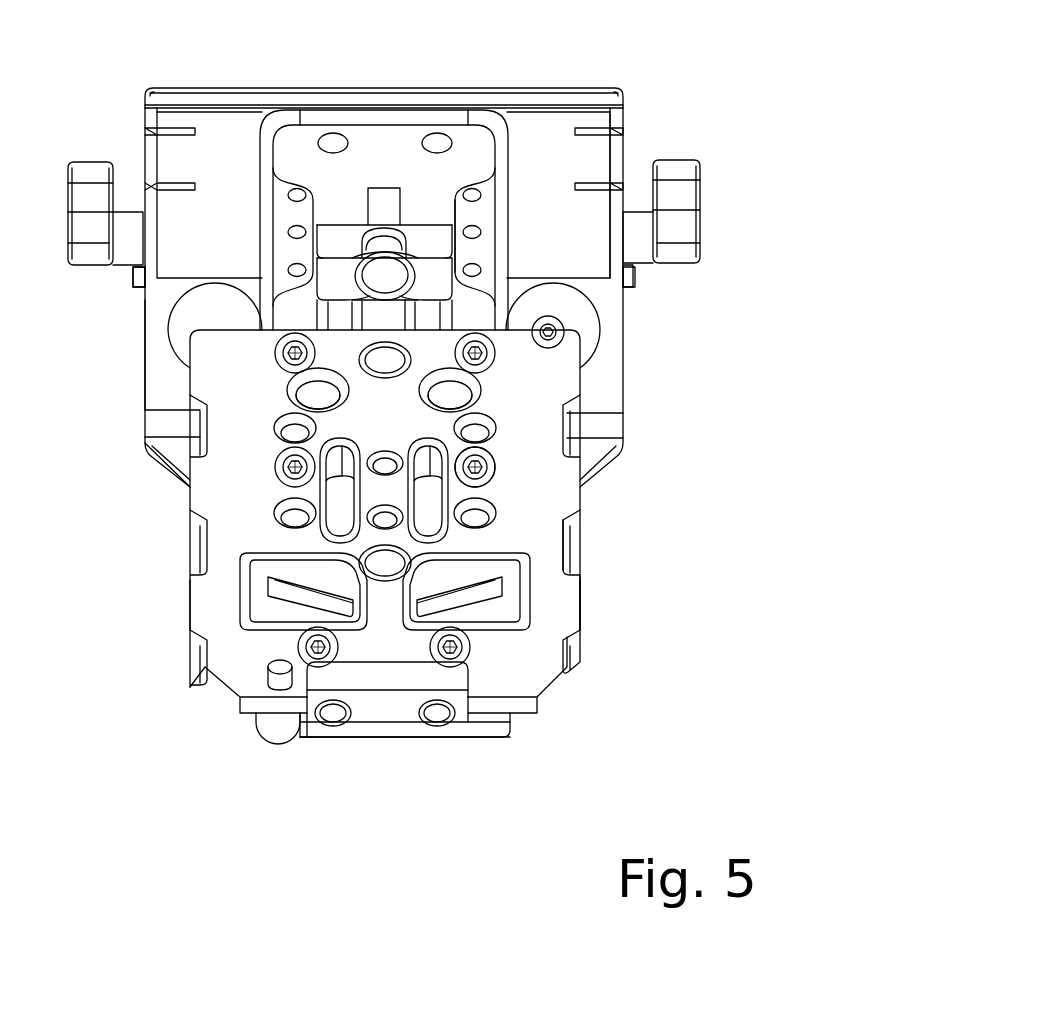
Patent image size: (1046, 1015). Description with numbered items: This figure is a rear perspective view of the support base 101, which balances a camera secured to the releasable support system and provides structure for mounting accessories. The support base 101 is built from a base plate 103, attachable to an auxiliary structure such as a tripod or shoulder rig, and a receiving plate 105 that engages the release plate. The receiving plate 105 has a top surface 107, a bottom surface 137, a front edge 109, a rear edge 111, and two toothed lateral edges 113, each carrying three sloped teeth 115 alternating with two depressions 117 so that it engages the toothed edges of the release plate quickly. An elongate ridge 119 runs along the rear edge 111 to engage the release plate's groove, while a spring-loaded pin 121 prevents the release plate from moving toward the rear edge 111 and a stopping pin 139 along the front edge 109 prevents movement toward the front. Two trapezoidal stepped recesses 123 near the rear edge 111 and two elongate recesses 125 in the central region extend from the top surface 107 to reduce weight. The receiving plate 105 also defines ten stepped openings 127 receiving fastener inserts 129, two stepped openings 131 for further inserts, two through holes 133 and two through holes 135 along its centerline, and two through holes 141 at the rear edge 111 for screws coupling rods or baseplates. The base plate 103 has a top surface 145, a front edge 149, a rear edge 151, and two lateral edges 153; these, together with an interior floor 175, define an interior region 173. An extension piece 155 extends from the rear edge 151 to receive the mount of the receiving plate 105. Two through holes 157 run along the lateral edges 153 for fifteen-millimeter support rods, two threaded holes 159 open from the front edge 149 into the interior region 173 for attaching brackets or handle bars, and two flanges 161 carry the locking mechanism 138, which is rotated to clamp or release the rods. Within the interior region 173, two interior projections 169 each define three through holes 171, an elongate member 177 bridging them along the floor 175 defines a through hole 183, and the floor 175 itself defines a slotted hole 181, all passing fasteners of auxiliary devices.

The support base 101 is at (745, 338).
The base plate 103 is at (636, 58).
The receiving plate 105 is at (745, 573).
The top surface 107 is at (378, 687).
The front edge 109 is at (229, 329).
The rear edge 111 is at (262, 712).
The lateral edges 113 is at (165, 607).
The teeth 115 is at (587, 607).
The depressions 117 is at (574, 556).
The elongate ridge 119 is at (386, 676).
The pin 121 is at (262, 673).
The stepped recesses 123 is at (385, 591).
The elongate recesses 125 is at (333, 488).
The stepped openings 127 is at (490, 425).
The fastener inserts 129 is at (492, 465).
The stepped openings 131 is at (460, 390).
The through holes 133 is at (385, 518).
The through holes 135 is at (365, 563).
The bottom surface 137 is at (405, 745).
The locking mechanism 138 is at (705, 253).
The stopping pin 139 is at (530, 347).
The through holes 141 is at (333, 722).
The top surface 145 is at (576, 180).
The front edge 149 is at (500, 86).
The rear edge 151 is at (162, 382).
The lateral edges 153 is at (145, 310).
The extension piece 155 is at (175, 472).
The through holes 157 is at (582, 325).
The threaded holes 159 is at (333, 134).
The flanges 161 is at (163, 150).
The interior projections 169 is at (289, 249).
The through holes 171 is at (287, 193).
The interior region 173 is at (386, 148).
The interior floor 175 is at (430, 250).
The elongate member 177 is at (424, 272).
The slotted hole 181 is at (380, 232).
The through hole 183 is at (383, 275).